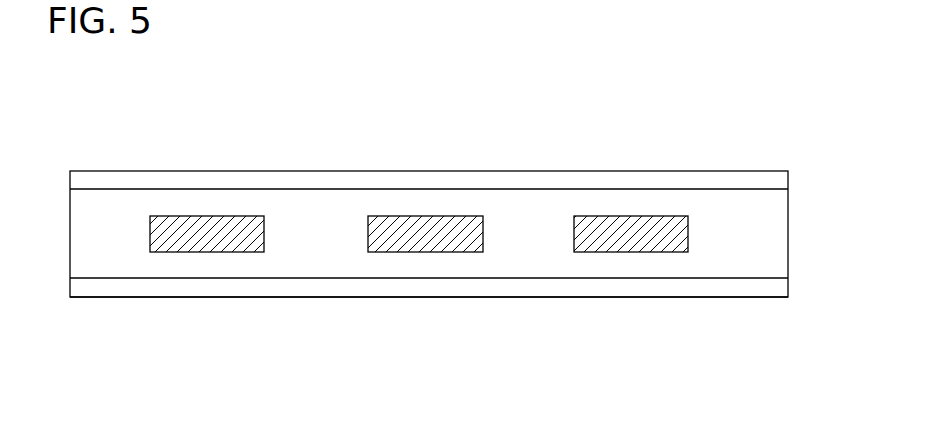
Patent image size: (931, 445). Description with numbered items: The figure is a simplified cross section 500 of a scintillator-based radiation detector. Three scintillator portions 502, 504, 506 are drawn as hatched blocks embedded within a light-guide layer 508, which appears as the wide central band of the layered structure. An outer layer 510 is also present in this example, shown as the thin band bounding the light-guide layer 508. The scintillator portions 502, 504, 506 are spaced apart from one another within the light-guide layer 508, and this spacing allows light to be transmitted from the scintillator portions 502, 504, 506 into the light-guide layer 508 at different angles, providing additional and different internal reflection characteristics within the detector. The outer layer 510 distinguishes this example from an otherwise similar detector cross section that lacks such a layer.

The cross section 500 is at (697, 80).
The scintillator portion 502 is at (207, 216).
The scintillator portion 504 is at (417, 216).
The scintillator portion 506 is at (622, 216).
The light-guide layer 508 is at (138, 279).
The outer layer 510 is at (535, 300).